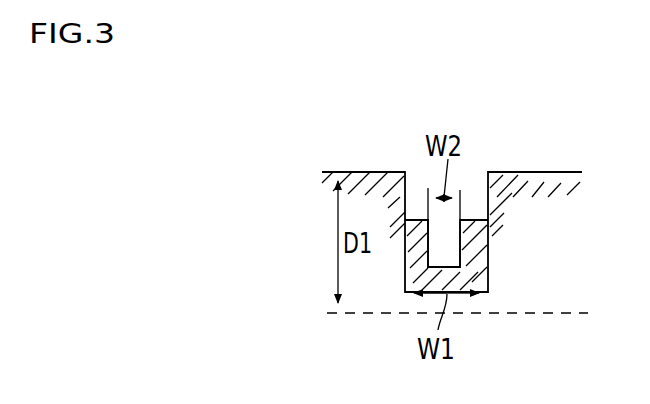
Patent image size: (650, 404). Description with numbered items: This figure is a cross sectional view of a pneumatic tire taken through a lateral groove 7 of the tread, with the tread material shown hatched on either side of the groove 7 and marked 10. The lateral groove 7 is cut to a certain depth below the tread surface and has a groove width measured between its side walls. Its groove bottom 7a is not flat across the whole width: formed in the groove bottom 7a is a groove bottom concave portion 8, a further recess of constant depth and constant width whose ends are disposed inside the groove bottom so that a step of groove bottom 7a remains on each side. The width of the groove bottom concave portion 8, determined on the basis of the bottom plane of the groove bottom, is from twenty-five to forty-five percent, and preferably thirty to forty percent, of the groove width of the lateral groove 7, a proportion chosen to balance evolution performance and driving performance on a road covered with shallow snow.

The substrate / insulating layer 10 is at (365, 172).
The lateral groove 7 is at (474, 180).
The groove bottom 7a is at (417, 219).
The groove bottom concave portion 8 is at (452, 249).